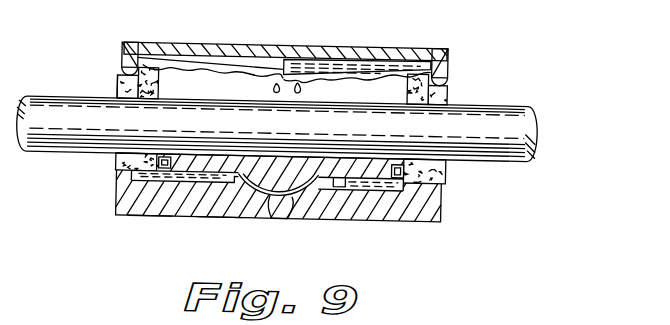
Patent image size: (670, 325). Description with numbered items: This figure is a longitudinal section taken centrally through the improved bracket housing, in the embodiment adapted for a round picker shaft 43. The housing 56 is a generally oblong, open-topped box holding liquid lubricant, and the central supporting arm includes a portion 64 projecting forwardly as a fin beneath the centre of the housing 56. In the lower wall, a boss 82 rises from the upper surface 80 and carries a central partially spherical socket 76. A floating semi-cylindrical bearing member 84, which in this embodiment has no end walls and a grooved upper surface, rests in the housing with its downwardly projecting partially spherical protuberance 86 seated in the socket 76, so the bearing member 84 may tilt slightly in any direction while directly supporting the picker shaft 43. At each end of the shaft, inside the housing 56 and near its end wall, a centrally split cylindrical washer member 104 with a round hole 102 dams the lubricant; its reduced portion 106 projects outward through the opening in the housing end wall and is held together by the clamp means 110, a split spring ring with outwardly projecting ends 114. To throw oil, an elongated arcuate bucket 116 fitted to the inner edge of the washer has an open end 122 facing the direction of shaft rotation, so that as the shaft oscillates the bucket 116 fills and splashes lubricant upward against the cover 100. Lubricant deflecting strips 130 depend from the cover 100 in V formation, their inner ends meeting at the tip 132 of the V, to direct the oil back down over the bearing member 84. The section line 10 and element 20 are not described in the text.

The section line 10- 10 is at (440, 12).
The housing 20 is at (158, 211).
The picker shaft 43 is at (75, 102).
The housing 56 is at (224, 209).
The portion of the supporting arm 64 is at (280, 210).
The partially spherical socket 76 is at (278, 213).
The upper surface of the lower wall 80 is at (428, 179).
The boss 82 is at (345, 183).
The floating semi-cylindrical bearing member 84 is at (234, 175).
The partially spherical protuberance 86 is at (292, 212).
The cover 100 is at (225, 31).
The hole in the washer member 102 is at (118, 163).
The centrally split cylindrical washer member 104 is at (118, 160).
The reduced portion of the washer member 106 is at (118, 84).
The clamp means 110 is at (135, 176).
The outwardly projecting ends of the spring ring 114 is at (124, 60).
The bucket 116 is at (143, 214).
The open end of the bucket 122 is at (160, 169).
The lubricant deflecting strips 130 is at (320, 53).
The tip of the V 132 is at (283, 69).